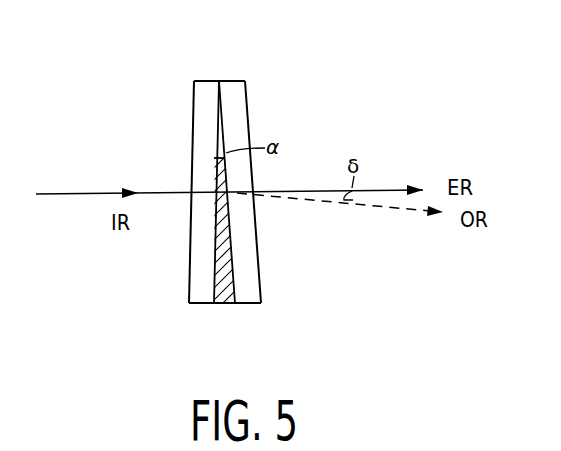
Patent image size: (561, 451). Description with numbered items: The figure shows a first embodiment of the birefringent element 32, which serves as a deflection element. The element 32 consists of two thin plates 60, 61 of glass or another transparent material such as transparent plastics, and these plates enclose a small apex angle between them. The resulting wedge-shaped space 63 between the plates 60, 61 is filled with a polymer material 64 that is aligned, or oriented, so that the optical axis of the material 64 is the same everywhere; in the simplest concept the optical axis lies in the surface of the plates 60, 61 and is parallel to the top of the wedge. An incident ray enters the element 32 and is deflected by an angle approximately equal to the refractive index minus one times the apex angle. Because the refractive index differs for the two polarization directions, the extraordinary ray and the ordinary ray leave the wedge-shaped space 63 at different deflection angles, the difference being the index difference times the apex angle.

The birefringent element 32 is at (204, 34).
The thin plate 60 is at (203, 92).
The thin plate 61 is at (232, 92).
The wedge-shaped space 63 is at (224, 304).
The polymer material 64 is at (225, 267).